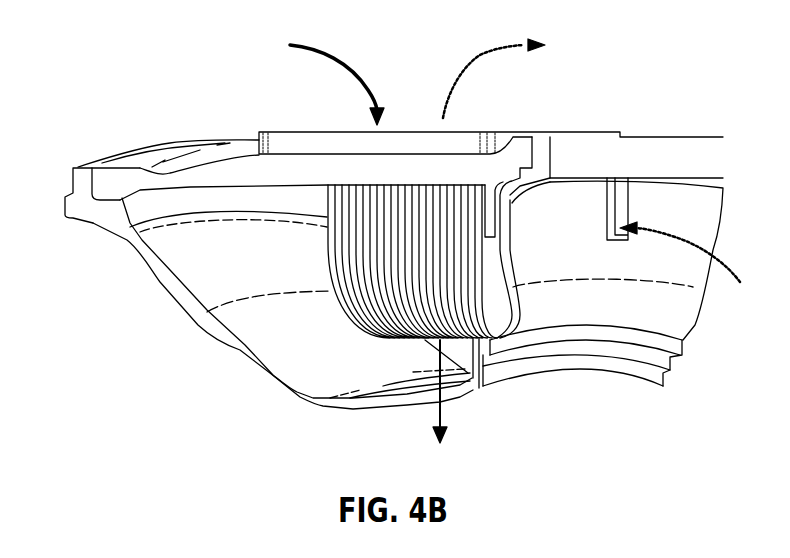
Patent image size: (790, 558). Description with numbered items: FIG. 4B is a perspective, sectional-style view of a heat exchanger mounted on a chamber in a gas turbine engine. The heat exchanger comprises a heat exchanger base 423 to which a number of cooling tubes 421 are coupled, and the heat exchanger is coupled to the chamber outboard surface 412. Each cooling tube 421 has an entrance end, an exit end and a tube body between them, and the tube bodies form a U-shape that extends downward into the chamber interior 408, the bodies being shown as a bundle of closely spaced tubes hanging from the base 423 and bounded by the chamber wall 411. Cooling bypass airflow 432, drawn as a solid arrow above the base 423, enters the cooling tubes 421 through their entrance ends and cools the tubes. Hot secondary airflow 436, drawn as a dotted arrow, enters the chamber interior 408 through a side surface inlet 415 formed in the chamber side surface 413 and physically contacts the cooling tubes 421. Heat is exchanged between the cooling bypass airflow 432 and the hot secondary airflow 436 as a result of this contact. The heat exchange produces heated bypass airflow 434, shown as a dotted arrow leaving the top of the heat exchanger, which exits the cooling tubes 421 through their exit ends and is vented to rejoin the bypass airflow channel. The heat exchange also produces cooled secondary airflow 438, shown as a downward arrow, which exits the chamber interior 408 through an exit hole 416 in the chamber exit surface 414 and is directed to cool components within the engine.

The chamber interior 408 is at (230, 317).
The housing wall 411 is at (148, 265).
The chamber outboard surface 412 is at (117, 180).
The chamber side surface 413 is at (667, 303).
The chamber exit surface 414 is at (463, 395).
The side surface inlet 415 is at (624, 218).
The exit hole 416 is at (410, 387).
The cooling tube 421 is at (367, 287).
The heat exchanger base 423 is at (290, 135).
The cooling bypass airflow 432 is at (362, 74).
The heated bypass airflow 434 is at (460, 67).
The hot secondary airflow 436 is at (697, 247).
The cooled secondary airflow 438 is at (430, 413).